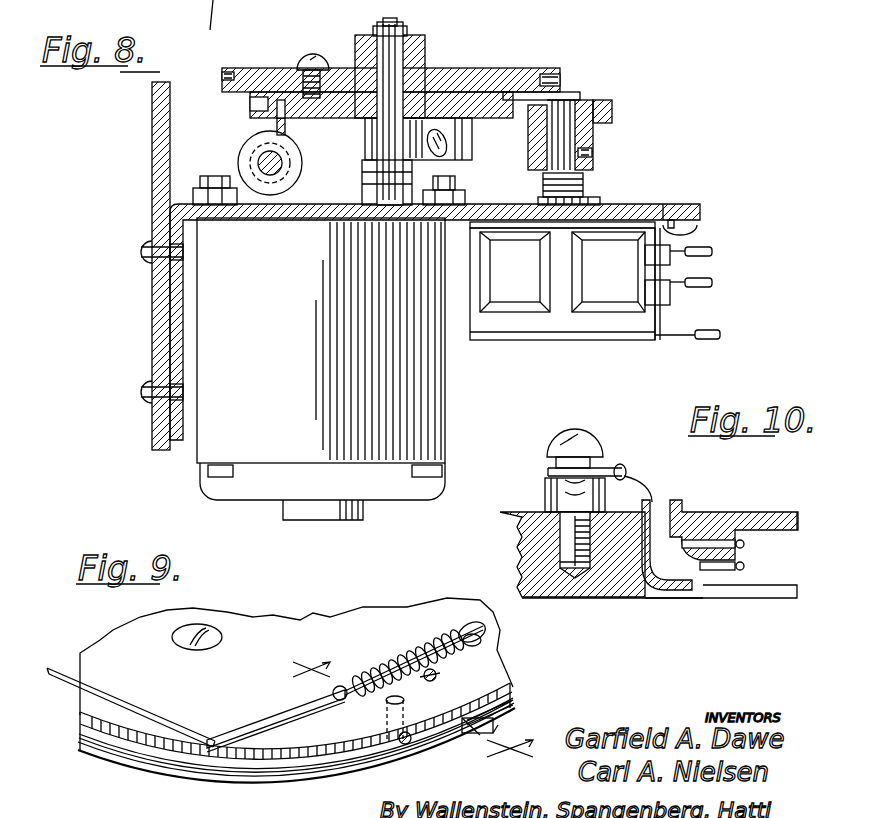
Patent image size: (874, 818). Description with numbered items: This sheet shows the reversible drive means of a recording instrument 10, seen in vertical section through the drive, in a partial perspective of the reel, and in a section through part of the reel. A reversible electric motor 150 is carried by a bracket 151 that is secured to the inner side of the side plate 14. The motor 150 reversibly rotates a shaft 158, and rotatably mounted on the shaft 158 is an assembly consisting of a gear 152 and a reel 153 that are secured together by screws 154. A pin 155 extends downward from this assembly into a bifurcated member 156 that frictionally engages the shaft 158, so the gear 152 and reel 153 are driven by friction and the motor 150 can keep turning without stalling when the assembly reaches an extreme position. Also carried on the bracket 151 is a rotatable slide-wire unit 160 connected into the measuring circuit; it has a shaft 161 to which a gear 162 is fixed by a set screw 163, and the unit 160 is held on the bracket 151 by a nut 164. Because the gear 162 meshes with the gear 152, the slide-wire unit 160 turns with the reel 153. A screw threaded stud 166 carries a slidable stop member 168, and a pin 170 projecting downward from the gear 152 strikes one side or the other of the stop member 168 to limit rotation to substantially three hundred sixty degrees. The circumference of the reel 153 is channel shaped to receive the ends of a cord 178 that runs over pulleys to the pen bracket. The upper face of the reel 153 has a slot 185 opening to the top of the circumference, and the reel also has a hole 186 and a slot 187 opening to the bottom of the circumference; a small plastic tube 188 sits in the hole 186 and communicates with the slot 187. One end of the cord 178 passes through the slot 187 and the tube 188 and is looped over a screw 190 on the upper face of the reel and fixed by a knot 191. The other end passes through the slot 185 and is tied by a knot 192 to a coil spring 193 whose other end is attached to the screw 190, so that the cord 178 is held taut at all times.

In FIG. 9, the electric control device 10 is at (395, 707).
In FIG. 8, the side plate 14 is at (160, 125).
In FIG. 8, the reversible electric motor 150 is at (440, 382).
In FIG. 8, the bracket 151 is at (322, 222).
In FIG. 8, the gear 152 is at (353, 108).
In FIG. 8, the reel 153 is at (476, 80).
In FIG. 10, the reel 153 is at (505, 545).
In FIG. 9, the reel 153 is at (313, 623).
In FIG. 8, the screws 154 is at (310, 58).
In FIG. 9, the screws 154 is at (213, 630).
In FIG. 8, the pin 155 is at (455, 138).
In FIG. 8, the bifurcated member 156 is at (460, 176).
In FIG. 8, the shaft 158 is at (398, 24).
In FIG. 8, the rotatable slide-wire unit 160 is at (584, 325).
In FIG. 8, the shaft 161 is at (600, 100).
In FIG. 8, the gear 162 is at (612, 108).
In FIG. 8, the set screw 163 is at (592, 153).
In FIG. 8, the nut 164 is at (592, 196).
In FIG. 8, the screw threaded stud 166 is at (262, 163).
In FIG. 8, the stop member 168 is at (282, 168).
In FIG. 8, the pin 170 is at (280, 128).
In FIG. 8, the cord 178 is at (228, 78).
In FIG. 10, the cord 178 is at (746, 551).
In FIG. 9, the cord 178 is at (63, 667).
In FIG. 9, the slot 185 is at (243, 727).
In FIG. 10, the hole 186 is at (665, 593).
In FIG. 10, the slot 187 is at (712, 590).
In FIG. 9, the slot 187 is at (480, 735).
In FIG. 10, the plastic tube 188 is at (690, 520).
In FIG. 9, the plastic tube 188 is at (350, 773).
In FIG. 10, the screw 190 is at (561, 440).
In FIG. 9, the screw 190 is at (470, 626).
In FIG. 10, the knot 191 is at (626, 468).
In FIG. 9, the knot 191 is at (447, 673).
In FIG. 9, the knot 192 is at (290, 760).
In FIG. 9, the coil spring 193 is at (410, 650).